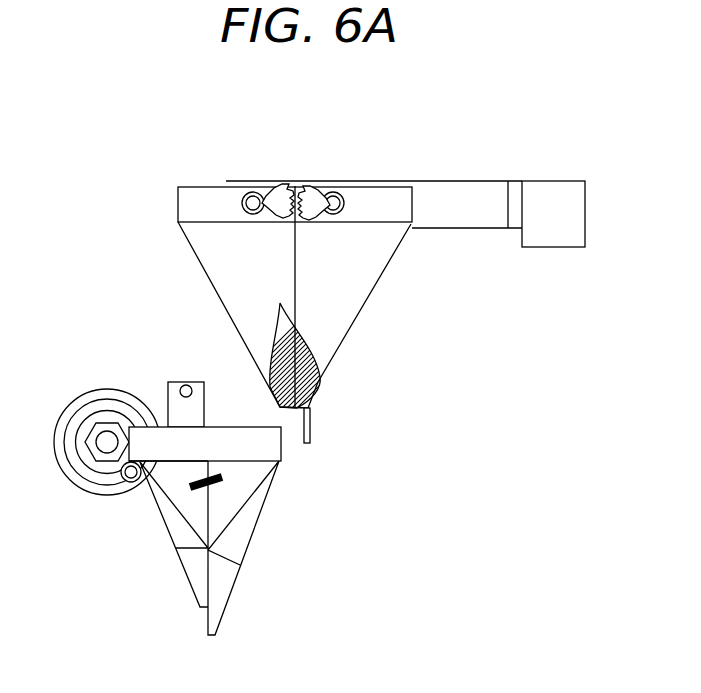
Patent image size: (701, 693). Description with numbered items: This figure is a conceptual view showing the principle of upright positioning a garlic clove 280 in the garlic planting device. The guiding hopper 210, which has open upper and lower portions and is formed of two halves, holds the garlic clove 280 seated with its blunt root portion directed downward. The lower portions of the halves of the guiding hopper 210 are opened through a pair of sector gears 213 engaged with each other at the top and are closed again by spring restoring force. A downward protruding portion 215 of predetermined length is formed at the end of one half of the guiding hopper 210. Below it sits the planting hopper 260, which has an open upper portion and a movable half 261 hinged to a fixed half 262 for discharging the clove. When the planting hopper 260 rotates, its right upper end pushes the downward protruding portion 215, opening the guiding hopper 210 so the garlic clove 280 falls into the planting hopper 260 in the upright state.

The guiding hopper 210 is at (214, 288).
The sector gears 213 is at (310, 199).
The garlic clove 280 is at (320, 380).
The downward protruding portion 215 is at (310, 425).
The planting hopper 260 is at (248, 546).
The movable half 261 is at (178, 517).
The fixed half 262 is at (223, 478).